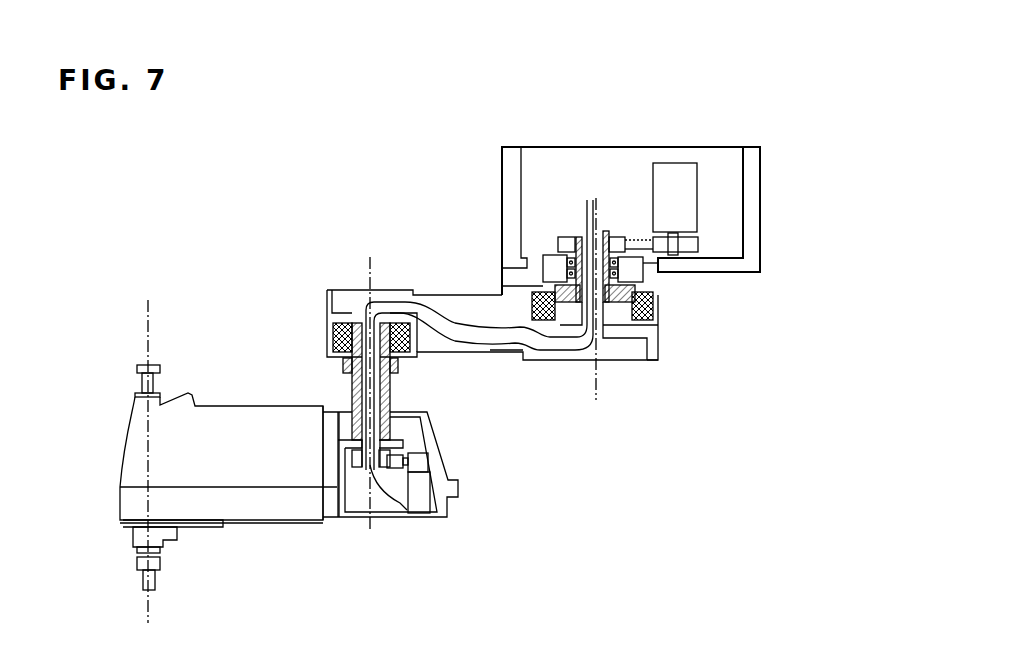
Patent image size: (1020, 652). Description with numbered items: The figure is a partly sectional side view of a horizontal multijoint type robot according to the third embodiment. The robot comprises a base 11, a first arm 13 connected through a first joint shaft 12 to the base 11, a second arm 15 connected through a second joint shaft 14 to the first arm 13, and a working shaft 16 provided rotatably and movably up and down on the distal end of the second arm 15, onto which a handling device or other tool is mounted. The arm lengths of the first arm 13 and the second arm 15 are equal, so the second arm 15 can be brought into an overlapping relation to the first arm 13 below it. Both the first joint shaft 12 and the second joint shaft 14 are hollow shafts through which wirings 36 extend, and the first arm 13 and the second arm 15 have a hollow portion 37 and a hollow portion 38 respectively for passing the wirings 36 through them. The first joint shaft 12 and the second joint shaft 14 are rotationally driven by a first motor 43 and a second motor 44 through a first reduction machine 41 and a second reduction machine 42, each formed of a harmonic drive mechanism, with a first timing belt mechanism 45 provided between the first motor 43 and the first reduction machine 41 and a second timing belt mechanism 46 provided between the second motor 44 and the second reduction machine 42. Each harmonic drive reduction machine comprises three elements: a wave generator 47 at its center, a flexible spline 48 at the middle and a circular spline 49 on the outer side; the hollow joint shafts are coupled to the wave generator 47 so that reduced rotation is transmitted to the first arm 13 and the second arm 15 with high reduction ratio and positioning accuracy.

The base 11 is at (752, 187).
The first joint shaft 12 is at (582, 230).
The first arm 13 is at (453, 295).
The second joint shaft 14 is at (358, 310).
The second arm 15 is at (258, 406).
The working shaft 16 is at (125, 577).
The wirings 36 is at (568, 365).
The hollow portion 37 is at (497, 338).
The hollow portion 38 is at (357, 497).
The first reduction machine 41 is at (787, 375).
The second reduction machine 42 is at (400, 388).
The first motor 43 is at (676, 173).
The second motor 44 is at (425, 503).
The first timing belt mechanism 45 is at (637, 240).
The second timing belt mechanism 46 is at (392, 480).
The wave generator 47 is at (617, 307).
The flexible spline 48 is at (655, 330).
The circular spline 49 is at (655, 305).